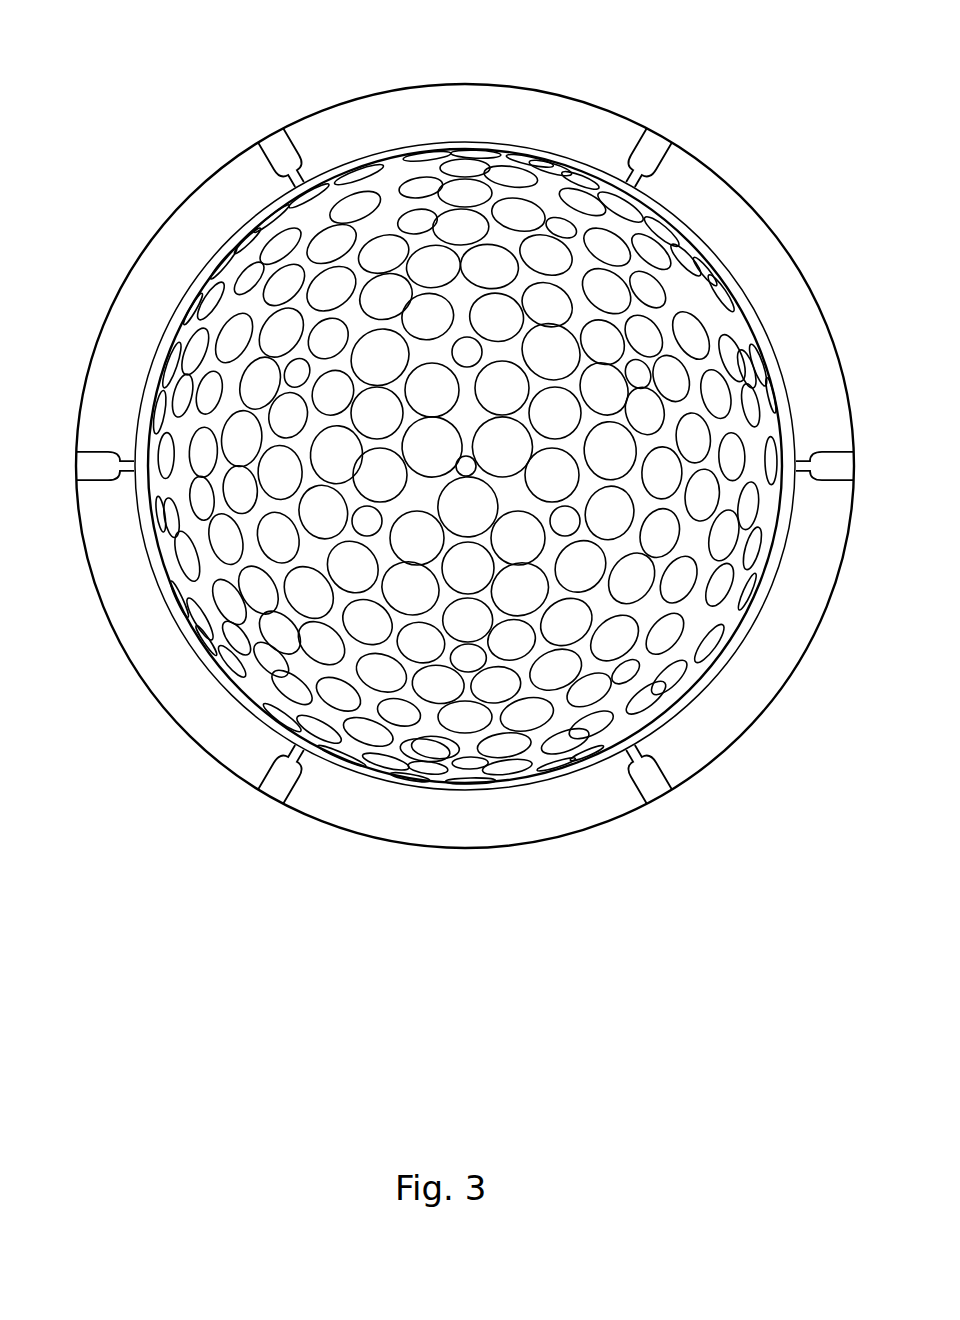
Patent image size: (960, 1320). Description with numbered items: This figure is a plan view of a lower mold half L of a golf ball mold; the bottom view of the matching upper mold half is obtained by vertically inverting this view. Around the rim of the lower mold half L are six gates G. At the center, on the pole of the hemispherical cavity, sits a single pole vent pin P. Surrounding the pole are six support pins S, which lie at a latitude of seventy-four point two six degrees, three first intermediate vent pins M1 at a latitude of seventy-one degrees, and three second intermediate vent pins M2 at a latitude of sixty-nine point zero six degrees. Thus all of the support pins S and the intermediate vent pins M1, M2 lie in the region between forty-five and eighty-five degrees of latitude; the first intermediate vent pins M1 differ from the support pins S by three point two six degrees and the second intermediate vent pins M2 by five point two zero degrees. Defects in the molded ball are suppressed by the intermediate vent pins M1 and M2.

The lower mold half L is at (770, 81).
The gate G is at (282, 146).
The pole vent pin P is at (467, 462).
The support pin S is at (466, 463).
The first intermediate vent pin M1 is at (466, 490).
The second intermediate vent pin M2 is at (460, 348).